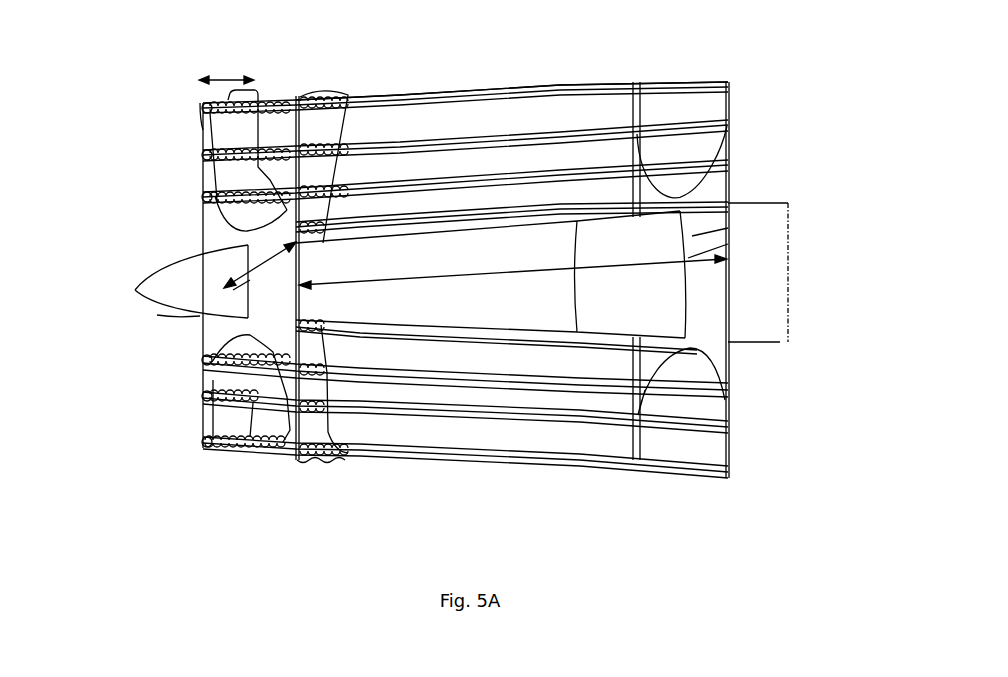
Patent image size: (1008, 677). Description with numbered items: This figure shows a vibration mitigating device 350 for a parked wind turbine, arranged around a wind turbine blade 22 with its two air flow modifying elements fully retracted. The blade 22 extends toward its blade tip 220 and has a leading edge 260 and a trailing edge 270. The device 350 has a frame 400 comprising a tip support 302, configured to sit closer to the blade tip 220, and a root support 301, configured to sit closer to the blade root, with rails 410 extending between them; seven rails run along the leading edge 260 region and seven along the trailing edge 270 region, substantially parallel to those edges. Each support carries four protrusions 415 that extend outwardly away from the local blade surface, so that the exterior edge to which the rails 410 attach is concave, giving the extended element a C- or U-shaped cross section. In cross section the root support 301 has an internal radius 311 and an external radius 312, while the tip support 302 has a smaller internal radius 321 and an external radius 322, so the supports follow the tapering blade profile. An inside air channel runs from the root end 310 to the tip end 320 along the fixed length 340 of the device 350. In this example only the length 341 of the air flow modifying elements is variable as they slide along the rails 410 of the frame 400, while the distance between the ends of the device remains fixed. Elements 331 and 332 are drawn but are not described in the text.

The wind turbine blade 22 is at (763, 327).
The blade tip 220 is at (133, 292).
The leading edge 260 is at (157, 315).
The trailing edge 270 is at (666, 258).
The root support 301 is at (740, 176).
The tip support 302 is at (202, 229).
The root end 310 is at (730, 352).
The internal radius of root support 311 is at (728, 244).
The external radius of root support 312 is at (728, 228).
The tip end 320 is at (203, 350).
The internal radius of tip support 321 is at (233, 290).
The external radius of tip support 322 is at (268, 262).
The lower intermediate frame member 331 is at (340, 433).
The upper intermediate frame member 332 is at (342, 96).
The length of the vibration mitigating device 340 is at (728, 281).
The length of the air flow modifying element 341 is at (230, 72).
The vibration mitigating device 350 is at (167, 121).
The frame 400 is at (752, 95).
The rails 410 is at (447, 140).
The protrusions 415 is at (290, 186).